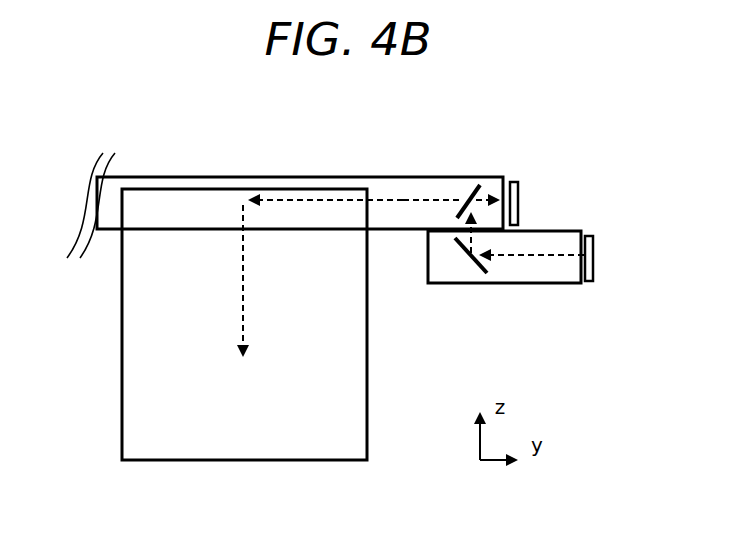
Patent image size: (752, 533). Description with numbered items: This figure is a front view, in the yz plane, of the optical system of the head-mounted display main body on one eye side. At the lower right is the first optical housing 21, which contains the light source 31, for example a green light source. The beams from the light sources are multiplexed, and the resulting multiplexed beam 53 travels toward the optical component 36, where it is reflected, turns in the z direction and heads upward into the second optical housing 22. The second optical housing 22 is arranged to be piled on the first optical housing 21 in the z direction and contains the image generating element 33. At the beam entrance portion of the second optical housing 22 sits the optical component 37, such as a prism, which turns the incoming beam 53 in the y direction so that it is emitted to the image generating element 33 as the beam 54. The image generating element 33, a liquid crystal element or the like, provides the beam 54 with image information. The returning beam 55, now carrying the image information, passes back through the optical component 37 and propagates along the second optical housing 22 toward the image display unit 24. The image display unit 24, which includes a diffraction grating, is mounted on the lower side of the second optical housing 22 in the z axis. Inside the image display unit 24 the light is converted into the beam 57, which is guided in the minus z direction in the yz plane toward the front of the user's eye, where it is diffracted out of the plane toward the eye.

The first optical housing 21 is at (535, 285).
The second optical housing 22 is at (245, 176).
The image display unit 24 is at (121, 398).
The light source 31 is at (594, 262).
The image generating element 33 is at (519, 197).
The optical component 36 is at (463, 253).
The optical component 37 is at (475, 193).
The multiplexed beam 53 is at (466, 243).
The beam 54 is at (487, 210).
The beam 55 is at (403, 199).
The beam 57 is at (242, 305).